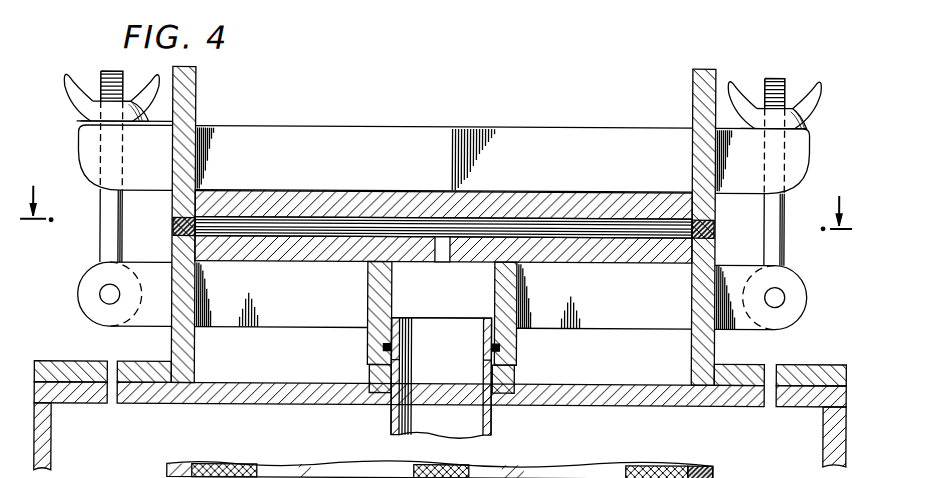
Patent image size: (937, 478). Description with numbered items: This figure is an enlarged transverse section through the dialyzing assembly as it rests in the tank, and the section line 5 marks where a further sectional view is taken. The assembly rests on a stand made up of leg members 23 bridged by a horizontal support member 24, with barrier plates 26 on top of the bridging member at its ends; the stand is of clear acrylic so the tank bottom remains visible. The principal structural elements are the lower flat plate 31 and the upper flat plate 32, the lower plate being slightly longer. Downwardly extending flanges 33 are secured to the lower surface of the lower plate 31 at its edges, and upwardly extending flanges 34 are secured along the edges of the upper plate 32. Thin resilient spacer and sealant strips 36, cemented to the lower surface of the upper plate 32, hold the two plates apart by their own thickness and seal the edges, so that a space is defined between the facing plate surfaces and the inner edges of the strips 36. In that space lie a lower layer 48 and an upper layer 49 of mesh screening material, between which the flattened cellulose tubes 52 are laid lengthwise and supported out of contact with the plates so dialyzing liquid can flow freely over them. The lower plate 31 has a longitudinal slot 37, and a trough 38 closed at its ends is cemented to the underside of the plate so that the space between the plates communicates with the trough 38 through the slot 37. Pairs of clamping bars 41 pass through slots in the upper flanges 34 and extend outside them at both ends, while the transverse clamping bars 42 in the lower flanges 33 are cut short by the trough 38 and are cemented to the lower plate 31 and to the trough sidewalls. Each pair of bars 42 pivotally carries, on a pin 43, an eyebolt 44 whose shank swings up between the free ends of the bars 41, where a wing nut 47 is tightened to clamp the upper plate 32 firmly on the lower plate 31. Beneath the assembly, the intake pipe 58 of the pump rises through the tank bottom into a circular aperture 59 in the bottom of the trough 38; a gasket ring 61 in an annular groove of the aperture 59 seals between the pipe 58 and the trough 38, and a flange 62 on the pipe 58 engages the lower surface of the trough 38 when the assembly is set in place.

The section line 5- 5 is at (436, 196).
The leg member 23 is at (50, 456).
The horizontal support member 24 is at (145, 394).
The barrier plate 26 is at (78, 363).
The lower flat plate 31 is at (172, 250).
The upper flat plate 32 is at (245, 193).
The downwardly extending flange 33 is at (697, 357).
The upwardly extending flange 34 is at (190, 93).
The spacer and sealant strip 36 is at (173, 226).
The slot 37 is at (441, 263).
The trough 38 is at (369, 333).
The clamping bar 41 is at (548, 128).
The clamping bar 42 is at (272, 329).
The pin 43 is at (775, 300).
The eyebolt 44 is at (785, 258).
The wing nut 47 is at (70, 97).
The lower layer of mesh screening material 48 is at (287, 238).
The upper layer of mesh screening material 49 is at (340, 226).
The cellulose tube 52 is at (291, 228).
The intake pipe 58 is at (492, 429).
The circular aperture 59 is at (492, 363).
The gasket ring 61 is at (385, 348).
The flange 62 is at (518, 377).